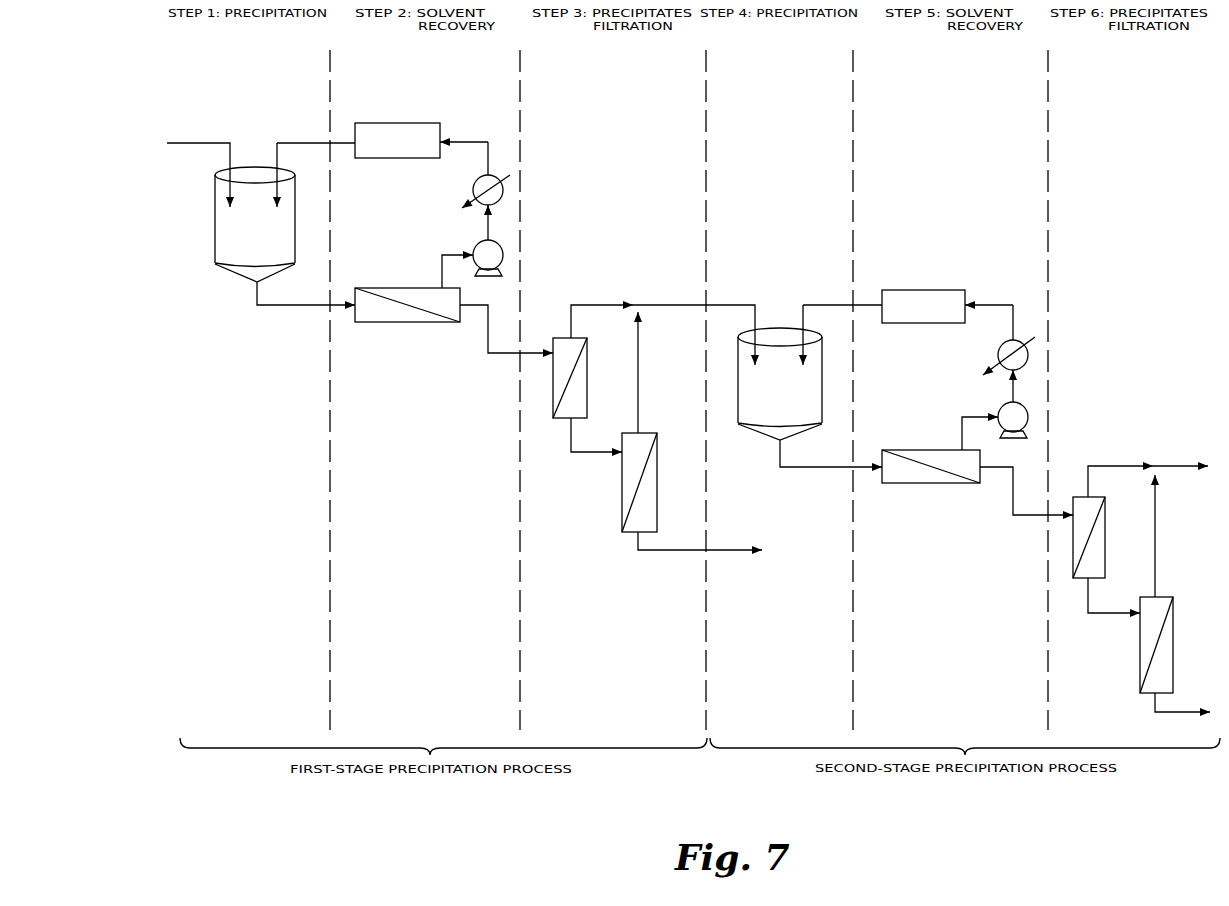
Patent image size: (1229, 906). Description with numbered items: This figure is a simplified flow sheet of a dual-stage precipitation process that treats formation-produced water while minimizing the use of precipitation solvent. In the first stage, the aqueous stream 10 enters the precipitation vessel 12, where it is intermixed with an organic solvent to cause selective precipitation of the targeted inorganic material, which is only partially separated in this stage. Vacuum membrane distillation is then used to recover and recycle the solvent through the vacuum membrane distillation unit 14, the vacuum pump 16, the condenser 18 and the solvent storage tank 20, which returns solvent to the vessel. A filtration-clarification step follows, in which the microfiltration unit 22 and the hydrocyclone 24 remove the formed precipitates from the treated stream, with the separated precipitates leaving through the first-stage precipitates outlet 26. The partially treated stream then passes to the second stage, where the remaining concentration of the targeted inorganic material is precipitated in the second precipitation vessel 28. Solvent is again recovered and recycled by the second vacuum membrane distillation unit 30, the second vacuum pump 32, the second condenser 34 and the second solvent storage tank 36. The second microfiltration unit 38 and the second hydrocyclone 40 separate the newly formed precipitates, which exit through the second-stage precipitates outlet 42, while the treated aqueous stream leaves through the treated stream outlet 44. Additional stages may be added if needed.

The aqueous stream 10 is at (200, 162).
The precipitation vessel 12 is at (220, 268).
The vacuum membrane distillation unit 14 is at (454, 341).
The vacuum pump 16 is at (459, 246).
The condenser 18 is at (452, 188).
The solvent storage tank 20 is at (421, 127).
The microfiltration unit 22 is at (556, 333).
The hydrocyclone 24 is at (620, 490).
The first-stage precipitates outlet 26 is at (700, 546).
The second precipitation vessel 28 is at (745, 427).
The second vacuum membrane distillation unit 30 is at (977, 502).
The second vacuum pump 32 is at (982, 410).
The second condenser 34 is at (976, 354).
The second solvent storage tank 36 is at (945, 294).
The second microfiltration unit 38 is at (1077, 494).
The second hydrocyclone 40 is at (1138, 649).
The second-stage precipitates outlet 42 is at (1182, 713).
The treated stream outlet 44 is at (1180, 452).